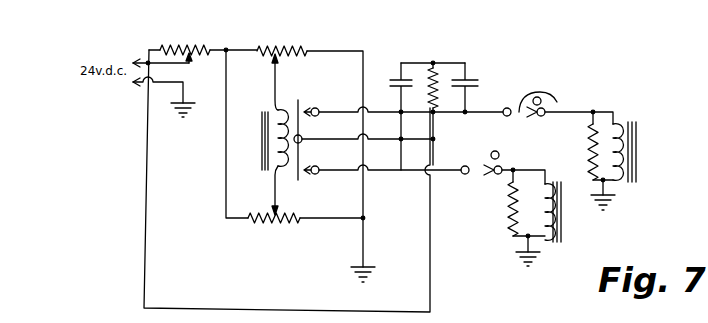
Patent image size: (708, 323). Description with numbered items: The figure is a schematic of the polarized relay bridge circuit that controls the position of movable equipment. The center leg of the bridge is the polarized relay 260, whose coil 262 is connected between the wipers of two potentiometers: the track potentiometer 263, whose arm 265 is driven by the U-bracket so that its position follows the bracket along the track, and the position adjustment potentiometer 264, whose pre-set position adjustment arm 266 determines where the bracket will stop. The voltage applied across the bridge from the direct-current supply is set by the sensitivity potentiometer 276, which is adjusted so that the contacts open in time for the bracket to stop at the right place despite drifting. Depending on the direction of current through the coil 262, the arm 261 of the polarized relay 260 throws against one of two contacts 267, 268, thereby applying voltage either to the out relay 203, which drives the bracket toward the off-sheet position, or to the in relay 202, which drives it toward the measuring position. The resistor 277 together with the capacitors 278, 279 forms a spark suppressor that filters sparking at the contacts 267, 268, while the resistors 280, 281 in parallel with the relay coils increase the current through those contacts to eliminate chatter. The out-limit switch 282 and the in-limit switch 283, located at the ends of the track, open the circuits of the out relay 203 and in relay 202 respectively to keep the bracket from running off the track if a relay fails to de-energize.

The sensitivity potentiometer 276 is at (189, 44).
The track potentiometer 263 is at (292, 35).
The arm of the track potentiometer 265 is at (275, 66).
The coil 262 is at (286, 106).
The polarized relay 260 is at (259, 126).
The arm 261 is at (303, 138).
The polarized relay contact 267 is at (316, 108).
The polarized relay contact 268 is at (316, 175).
The position adjustment arm 266 is at (277, 209).
The position adjustment potentiometer 264 is at (262, 224).
The capacitor 278 is at (393, 77).
The resistor 277 is at (436, 64).
The capacitor 279 is at (472, 79).
The out-limit switch 282 is at (560, 97).
The in-limit switch 283 is at (480, 165).
The resistor 280 is at (508, 203).
The resistor 281 is at (574, 152).
The in relay 202 is at (563, 216).
The out relay 203 is at (638, 146).